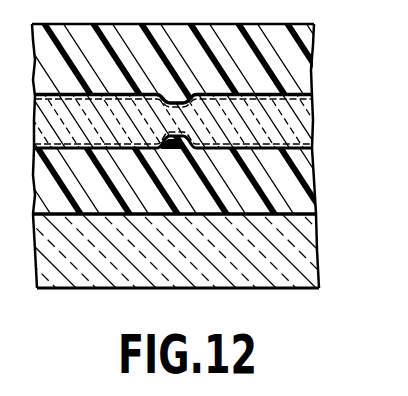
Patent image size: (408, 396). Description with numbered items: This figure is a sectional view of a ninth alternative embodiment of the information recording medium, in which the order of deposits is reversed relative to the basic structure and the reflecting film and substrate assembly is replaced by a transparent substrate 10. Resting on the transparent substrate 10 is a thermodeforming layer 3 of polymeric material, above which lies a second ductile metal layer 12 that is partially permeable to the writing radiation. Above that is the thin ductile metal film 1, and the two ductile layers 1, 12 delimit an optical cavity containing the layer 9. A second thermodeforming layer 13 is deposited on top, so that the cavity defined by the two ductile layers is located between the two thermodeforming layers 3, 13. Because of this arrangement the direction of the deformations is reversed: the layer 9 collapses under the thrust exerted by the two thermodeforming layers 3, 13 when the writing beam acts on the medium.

The thermodeforming layer 13 is at (318, 63).
The ductile metal film 1 is at (311, 93).
The layer 9 is at (36, 127).
The second ductile metal layer 12 is at (309, 140).
The thermodeforming layer 3 is at (316, 181).
The transparent substrate 10 is at (314, 249).